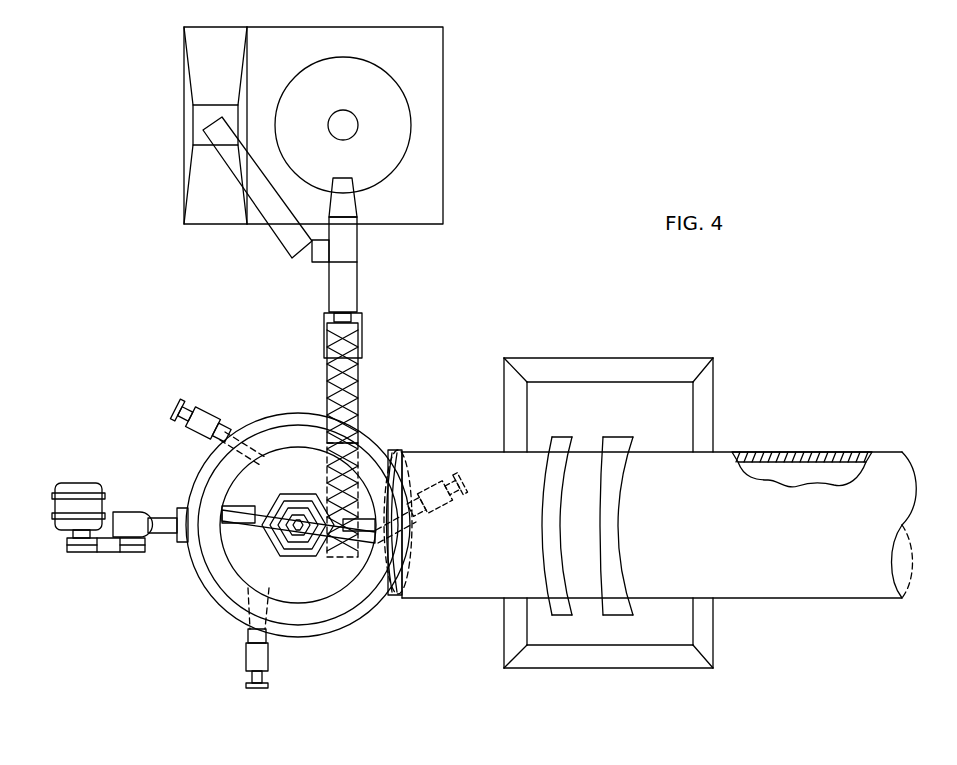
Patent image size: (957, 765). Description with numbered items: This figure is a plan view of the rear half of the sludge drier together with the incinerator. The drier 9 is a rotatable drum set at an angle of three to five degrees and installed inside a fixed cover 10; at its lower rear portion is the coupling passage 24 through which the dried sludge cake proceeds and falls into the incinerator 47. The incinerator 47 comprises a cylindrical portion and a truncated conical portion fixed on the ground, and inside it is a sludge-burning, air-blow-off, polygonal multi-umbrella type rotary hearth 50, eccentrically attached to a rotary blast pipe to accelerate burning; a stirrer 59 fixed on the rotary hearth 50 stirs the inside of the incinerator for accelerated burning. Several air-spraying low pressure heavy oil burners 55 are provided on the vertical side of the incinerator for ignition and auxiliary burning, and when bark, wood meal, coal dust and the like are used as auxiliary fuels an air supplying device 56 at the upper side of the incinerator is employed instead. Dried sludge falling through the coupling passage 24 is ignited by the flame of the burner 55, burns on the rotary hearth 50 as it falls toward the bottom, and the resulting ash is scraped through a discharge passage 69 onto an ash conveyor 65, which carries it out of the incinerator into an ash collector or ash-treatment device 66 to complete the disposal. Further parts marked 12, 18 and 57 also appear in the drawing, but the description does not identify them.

The drier 9 is at (834, 468).
The fixed cover 10 is at (445, 600).
The first ring 12 is at (557, 504).
The second ring 18 is at (620, 510).
The coupling passage 24 is at (448, 453).
The incinerator 47 is at (204, 560).
The rotary hearth 50 is at (291, 492).
The heavy oil burner 55 is at (206, 414).
The air supplying device 56 is at (164, 518).
The pressure source 57 is at (121, 512).
The stirrer 59 is at (243, 514).
The ash conveyor 65 is at (358, 403).
The ash-treatment device 66 is at (444, 100).
The discharge passage 69 is at (358, 381).